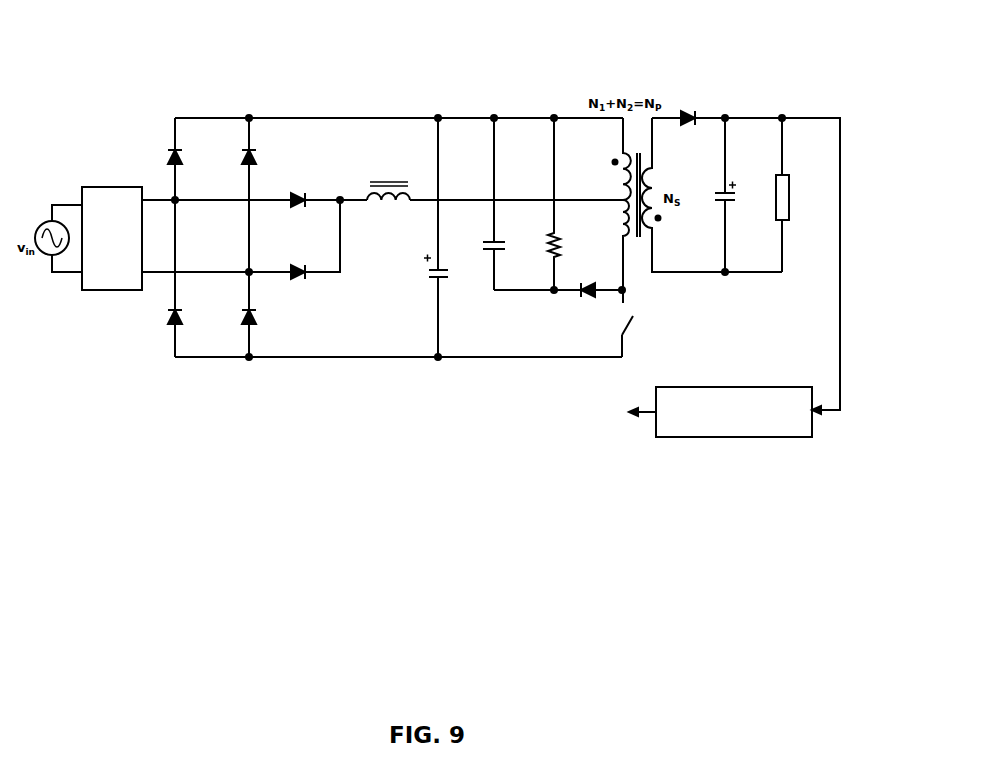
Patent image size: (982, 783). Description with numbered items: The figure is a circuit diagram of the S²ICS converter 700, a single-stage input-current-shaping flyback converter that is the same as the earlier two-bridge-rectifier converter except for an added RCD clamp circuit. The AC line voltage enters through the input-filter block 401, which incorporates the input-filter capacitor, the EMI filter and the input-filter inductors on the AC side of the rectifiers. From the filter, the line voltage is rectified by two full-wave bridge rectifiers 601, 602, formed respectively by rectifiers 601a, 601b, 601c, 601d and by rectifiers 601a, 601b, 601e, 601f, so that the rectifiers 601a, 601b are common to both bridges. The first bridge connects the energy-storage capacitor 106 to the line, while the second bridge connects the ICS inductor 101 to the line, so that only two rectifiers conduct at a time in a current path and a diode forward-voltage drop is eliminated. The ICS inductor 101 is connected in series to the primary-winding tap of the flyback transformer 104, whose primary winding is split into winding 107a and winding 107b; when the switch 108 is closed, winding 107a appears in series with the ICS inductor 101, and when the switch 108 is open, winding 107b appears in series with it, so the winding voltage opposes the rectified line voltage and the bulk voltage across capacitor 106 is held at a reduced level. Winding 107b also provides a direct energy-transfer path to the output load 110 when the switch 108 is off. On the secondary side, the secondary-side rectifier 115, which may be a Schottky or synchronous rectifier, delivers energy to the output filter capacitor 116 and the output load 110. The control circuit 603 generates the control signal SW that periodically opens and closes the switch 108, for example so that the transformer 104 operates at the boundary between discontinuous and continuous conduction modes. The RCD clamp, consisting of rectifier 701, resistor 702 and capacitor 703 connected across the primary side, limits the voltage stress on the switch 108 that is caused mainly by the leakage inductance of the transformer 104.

The S²ICS converter 700 is at (425, 53).
The input-filter block 401 is at (113, 186).
The full-wave bridge rectifier 601 is at (213, 237).
The rectifier 601a is at (168, 320).
The rectifier 601b is at (244, 320).
The rectifier 601c is at (183, 151).
The rectifier 601d is at (257, 151).
The rectifier 601e is at (304, 191).
The rectifier 601f is at (305, 279).
The full-wave bridge rectifier 602 is at (344, 253).
The ICS inductor 101 is at (402, 201).
The energy-storage capacitor 106 is at (431, 283).
The capacitor 703 is at (492, 238).
The resistor 702 is at (552, 238).
The rectifier 701 is at (593, 300).
The winding 107b is at (618, 167).
The winding 107a is at (622, 227).
The flyback transformer 104 is at (638, 242).
The switch 108 is at (638, 316).
The secondary-side rectifier 115 is at (696, 115).
The output capacitor C_F 116 is at (718, 205).
The output load 110 is at (795, 180).
The control circuit 603 is at (735, 385).